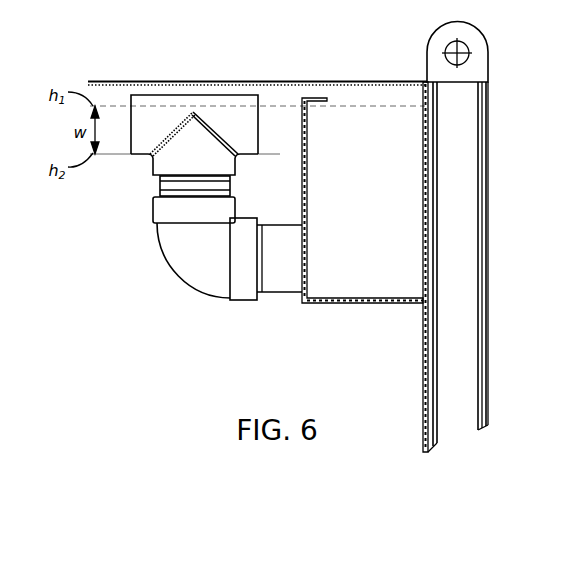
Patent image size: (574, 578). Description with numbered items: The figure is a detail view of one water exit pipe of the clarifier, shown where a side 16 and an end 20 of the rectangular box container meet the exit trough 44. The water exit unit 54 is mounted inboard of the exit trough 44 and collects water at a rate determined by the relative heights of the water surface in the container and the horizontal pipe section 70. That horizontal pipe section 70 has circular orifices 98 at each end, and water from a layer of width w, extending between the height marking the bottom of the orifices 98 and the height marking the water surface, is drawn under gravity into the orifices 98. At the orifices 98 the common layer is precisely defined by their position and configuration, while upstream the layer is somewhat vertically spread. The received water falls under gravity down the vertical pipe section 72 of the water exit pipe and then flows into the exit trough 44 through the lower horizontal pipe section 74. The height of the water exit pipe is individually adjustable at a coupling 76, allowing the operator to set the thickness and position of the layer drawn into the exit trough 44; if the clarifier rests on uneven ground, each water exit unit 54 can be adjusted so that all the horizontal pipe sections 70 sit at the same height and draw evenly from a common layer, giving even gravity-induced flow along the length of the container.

The side 16 is at (462, 108).
The end 20 is at (277, 378).
The exit trough 44 is at (363, 305).
The water exit unit 54 is at (185, 60).
The horizontal pipe section 70 is at (190, 107).
The vertical pipe section 72 is at (197, 228).
The horizontal pipe section 74 is at (261, 264).
The coupling 76 is at (222, 187).
The orifices 98 is at (199, 95).